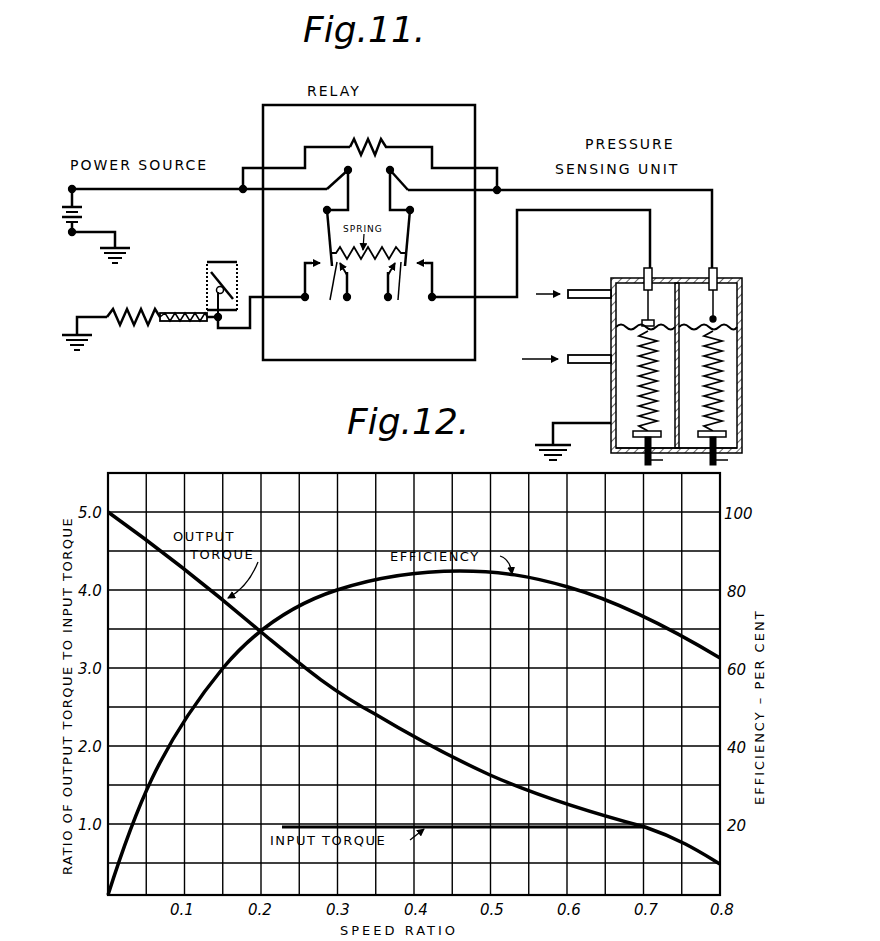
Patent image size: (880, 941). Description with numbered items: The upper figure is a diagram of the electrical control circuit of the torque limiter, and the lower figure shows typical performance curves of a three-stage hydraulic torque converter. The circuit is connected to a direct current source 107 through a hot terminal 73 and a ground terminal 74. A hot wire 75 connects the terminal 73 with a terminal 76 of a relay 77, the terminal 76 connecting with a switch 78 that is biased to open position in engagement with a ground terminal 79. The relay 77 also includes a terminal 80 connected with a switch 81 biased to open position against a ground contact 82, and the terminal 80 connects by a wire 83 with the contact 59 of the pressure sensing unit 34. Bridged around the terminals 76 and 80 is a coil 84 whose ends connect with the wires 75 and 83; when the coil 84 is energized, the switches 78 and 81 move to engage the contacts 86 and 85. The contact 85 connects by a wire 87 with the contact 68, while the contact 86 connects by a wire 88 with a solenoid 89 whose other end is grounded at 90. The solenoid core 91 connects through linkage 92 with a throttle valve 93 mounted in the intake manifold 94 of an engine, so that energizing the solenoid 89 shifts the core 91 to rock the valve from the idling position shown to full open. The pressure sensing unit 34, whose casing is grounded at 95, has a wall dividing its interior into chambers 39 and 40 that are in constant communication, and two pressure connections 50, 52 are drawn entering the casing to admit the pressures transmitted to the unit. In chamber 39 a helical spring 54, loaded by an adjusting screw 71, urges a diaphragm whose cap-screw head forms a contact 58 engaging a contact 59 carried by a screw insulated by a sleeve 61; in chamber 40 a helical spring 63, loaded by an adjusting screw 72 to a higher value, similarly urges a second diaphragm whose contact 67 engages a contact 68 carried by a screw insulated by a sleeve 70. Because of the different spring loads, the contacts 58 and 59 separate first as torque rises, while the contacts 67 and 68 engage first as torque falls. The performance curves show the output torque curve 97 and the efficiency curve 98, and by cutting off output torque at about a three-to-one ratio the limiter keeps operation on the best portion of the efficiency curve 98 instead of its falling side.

In FIG. 11, the pressure sensing unit 34 is at (742, 279).
In FIG. 11, the chamber 39 is at (744, 406).
In FIG. 11, the chamber 40 is at (620, 428).
In FIG. 11, the inlet pipe 50 is at (598, 355).
In FIG. 11, the inlet pipe 52 is at (594, 290).
In FIG. 11, the helical spring 54 is at (720, 376).
In FIG. 11, the contact 58 is at (744, 328).
In FIG. 11, the contact 59 is at (720, 318).
In FIG. 11, the sleeve 61 is at (709, 271).
In FIG. 11, the helical spring 63 is at (638, 400).
In FIG. 11, the contact 67 is at (612, 322).
In FIG. 11, the contact 68 is at (642, 317).
In FIG. 11, the sleeve 70 is at (644, 269).
In FIG. 11, the adjusting screw 71 is at (735, 457).
In FIG. 11, the adjusting screw 72 is at (668, 457).
In FIG. 11, the hot terminal 73 is at (69, 190).
In FIG. 11, the ground terminal 74 is at (69, 233).
In FIG. 11, the hot wire 75 is at (184, 190).
In FIG. 11, the terminal 76 is at (346, 170).
In FIG. 11, the relay 77 is at (263, 114).
In FIG. 11, the switch 78 is at (327, 226).
In FIG. 11, the ground terminal 79 is at (338, 296).
In FIG. 11, the terminal 80 is at (399, 166).
In FIG. 11, the switch 81 is at (410, 226).
In FIG. 11, the ground contact 82 is at (398, 296).
In FIG. 11, the wire 83 is at (515, 189).
In FIG. 11, the coil 84 is at (322, 148).
In FIG. 11, the contact 85 is at (425, 252).
In FIG. 11, the contact 86 is at (316, 261).
In FIG. 11, the wire 87 is at (517, 259).
In FIG. 11, the wire 88 is at (287, 300).
In FIG. 11, the solenoid 89 is at (136, 330).
In FIG. 11, the ground 90 is at (76, 318).
In FIG. 11, the solenoid core 91 is at (178, 326).
In FIG. 11, the linkage 92 is at (218, 330).
In FIG. 11, the throttle valve 93 is at (205, 284).
In FIG. 11, the intake manifold 94 is at (208, 266).
In FIG. 11, the ground 95 is at (553, 430).
In FIG. 11, the direct current source 107 is at (84, 211).
In FIG. 12, the output torque curve 97 is at (312, 680).
In FIG. 12, the efficiency curve 98 is at (316, 600).